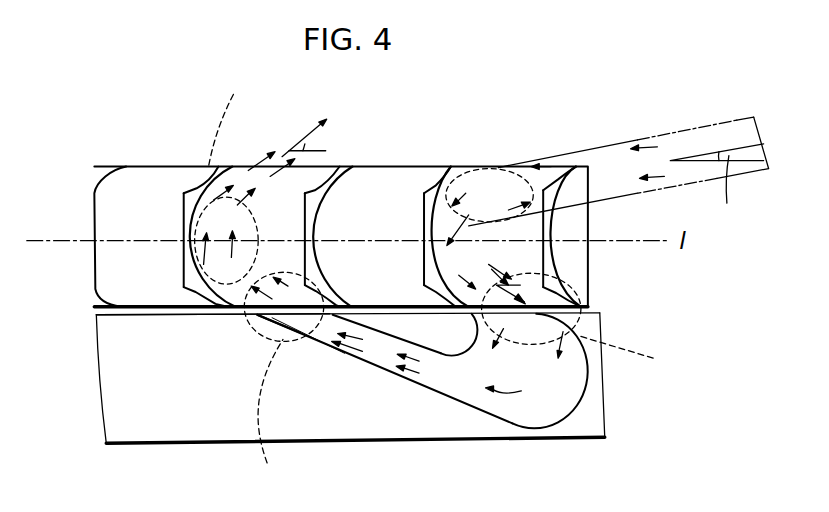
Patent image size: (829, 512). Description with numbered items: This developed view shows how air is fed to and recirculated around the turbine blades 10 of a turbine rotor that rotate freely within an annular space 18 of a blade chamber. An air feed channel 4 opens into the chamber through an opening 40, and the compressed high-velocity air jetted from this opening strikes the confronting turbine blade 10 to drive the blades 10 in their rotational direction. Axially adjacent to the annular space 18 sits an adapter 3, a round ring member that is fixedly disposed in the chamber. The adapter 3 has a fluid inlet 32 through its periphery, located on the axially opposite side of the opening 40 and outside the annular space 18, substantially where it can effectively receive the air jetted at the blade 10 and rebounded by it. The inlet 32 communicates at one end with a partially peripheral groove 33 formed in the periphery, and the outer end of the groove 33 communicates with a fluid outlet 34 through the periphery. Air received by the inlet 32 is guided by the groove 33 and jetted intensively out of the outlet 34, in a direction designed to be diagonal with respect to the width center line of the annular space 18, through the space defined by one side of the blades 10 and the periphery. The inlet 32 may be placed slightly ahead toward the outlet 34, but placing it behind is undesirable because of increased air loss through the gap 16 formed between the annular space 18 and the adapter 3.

The turbine blades 10 is at (341, 187).
The opening 40 is at (493, 163).
The air feed channel 4 is at (663, 130).
The adapter 3 is at (350, 386).
The gap 16 is at (148, 312).
The annular space 18 is at (170, 313).
The partially peripheral groove 33 is at (430, 383).
The fluid inlet 32 is at (543, 312).
The fluid outlet 34 is at (323, 313).